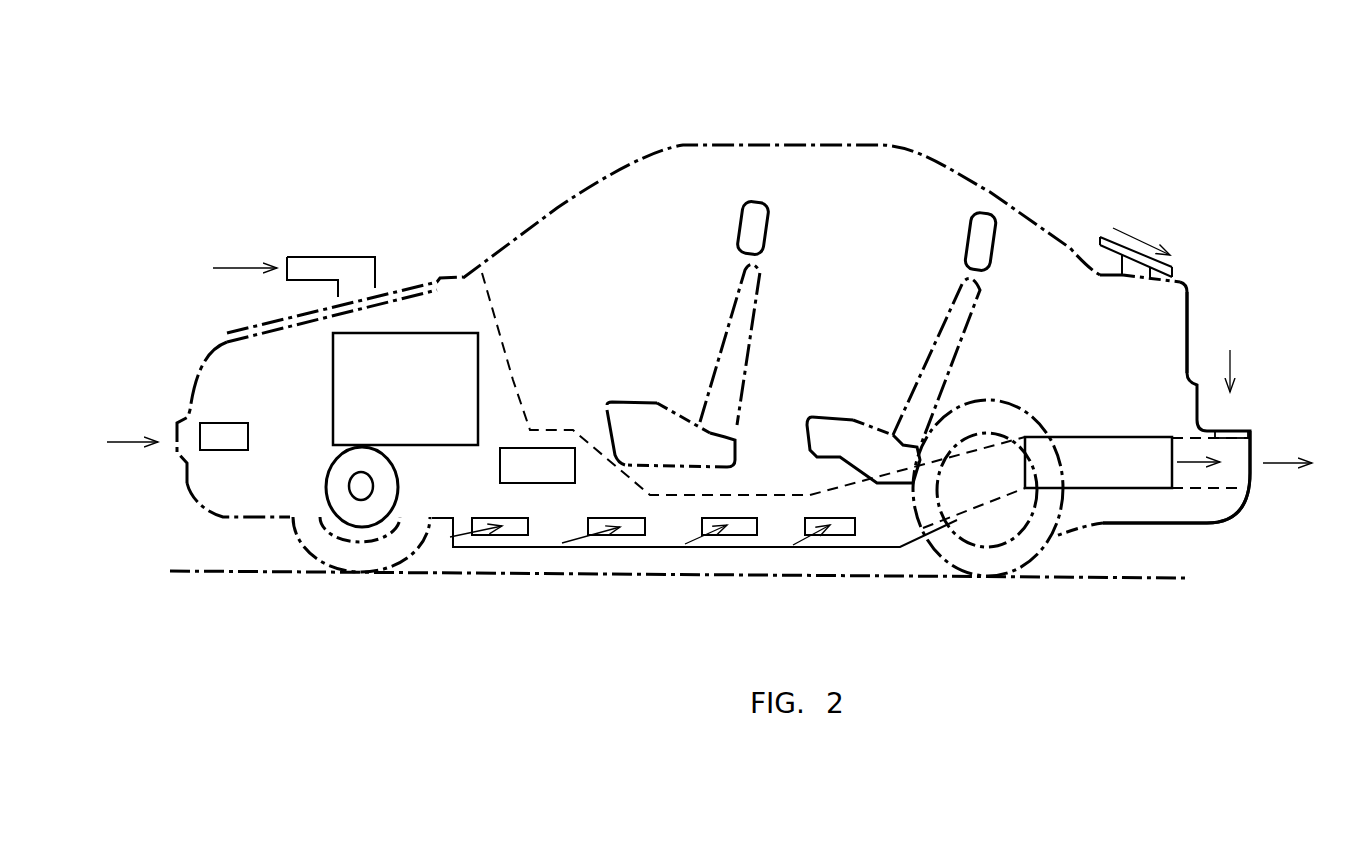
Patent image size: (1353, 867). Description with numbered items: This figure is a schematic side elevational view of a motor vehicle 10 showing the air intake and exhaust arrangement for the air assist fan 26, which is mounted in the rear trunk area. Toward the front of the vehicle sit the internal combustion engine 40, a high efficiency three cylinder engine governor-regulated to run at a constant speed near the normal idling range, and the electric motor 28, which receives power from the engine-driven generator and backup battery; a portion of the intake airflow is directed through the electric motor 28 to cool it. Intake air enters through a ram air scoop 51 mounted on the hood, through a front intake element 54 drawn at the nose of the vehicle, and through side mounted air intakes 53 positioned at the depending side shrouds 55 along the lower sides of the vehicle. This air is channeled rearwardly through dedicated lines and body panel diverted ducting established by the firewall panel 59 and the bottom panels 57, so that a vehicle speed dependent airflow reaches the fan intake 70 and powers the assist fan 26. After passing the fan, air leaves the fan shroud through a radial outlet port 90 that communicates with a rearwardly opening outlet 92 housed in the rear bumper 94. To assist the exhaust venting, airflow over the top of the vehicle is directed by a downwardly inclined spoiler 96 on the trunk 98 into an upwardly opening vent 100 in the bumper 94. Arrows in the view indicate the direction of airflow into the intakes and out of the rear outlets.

The motor vehicle 10 is at (673, 145).
The air assist fan 26 is at (1112, 478).
The electric motor 28 is at (523, 475).
The internal combustion engine 40 is at (405, 389).
The ram air scoop 51 is at (325, 262).
The side mounted air intakes 53 is at (632, 527).
The front sensor unit 54 is at (208, 433).
The depending side shrouds 55 is at (872, 530).
The bottom panels 57 is at (760, 493).
The firewall panel 59 is at (498, 325).
The fan intake 70 is at (963, 487).
The radial outlet port 90 is at (1223, 455).
The rearwardly opening outlet 92 is at (1250, 470).
The rear bumper 94 is at (1218, 508).
The spoiler 96 is at (1123, 248).
The trunk 98 is at (1177, 303).
The upwardly opening vent 100 is at (1227, 447).